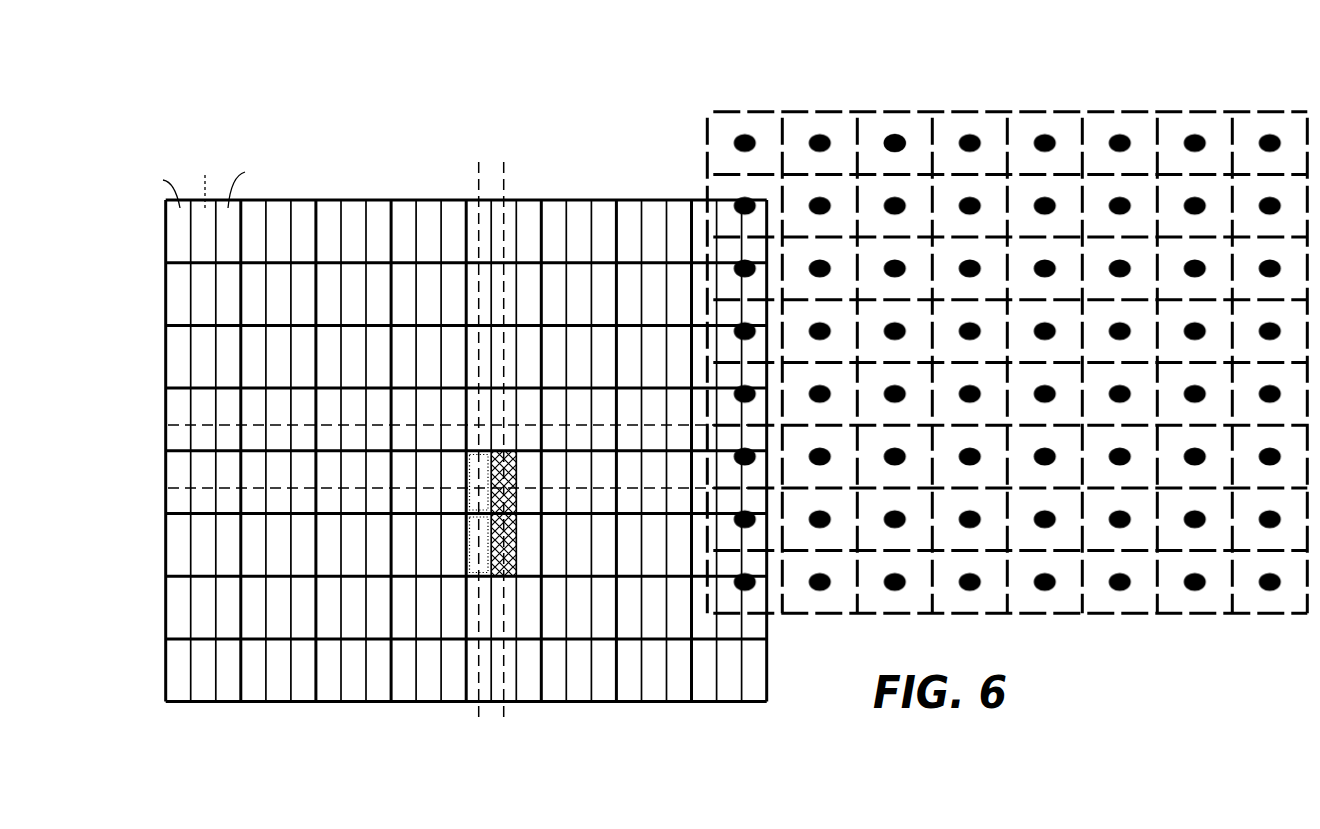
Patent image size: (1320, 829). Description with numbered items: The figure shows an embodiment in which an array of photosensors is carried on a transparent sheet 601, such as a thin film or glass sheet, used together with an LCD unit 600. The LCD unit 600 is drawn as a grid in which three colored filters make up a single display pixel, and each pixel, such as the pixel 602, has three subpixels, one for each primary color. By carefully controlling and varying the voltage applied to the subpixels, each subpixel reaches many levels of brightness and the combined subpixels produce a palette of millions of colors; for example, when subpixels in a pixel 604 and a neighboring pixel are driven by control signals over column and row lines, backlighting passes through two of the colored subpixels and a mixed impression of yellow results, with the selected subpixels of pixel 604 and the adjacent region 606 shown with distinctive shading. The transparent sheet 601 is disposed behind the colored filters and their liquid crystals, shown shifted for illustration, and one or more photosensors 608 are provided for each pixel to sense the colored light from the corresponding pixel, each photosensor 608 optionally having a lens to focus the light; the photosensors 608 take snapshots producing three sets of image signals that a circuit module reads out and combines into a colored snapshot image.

The LCD unit 600 is at (698, 403).
The transparent sheet 601 is at (700, 150).
The pixel 602 is at (165, 247).
The pixel 604 is at (463, 493).
The second sub-pixel column region 606 is at (462, 552).
The photosensors 608 is at (890, 132).